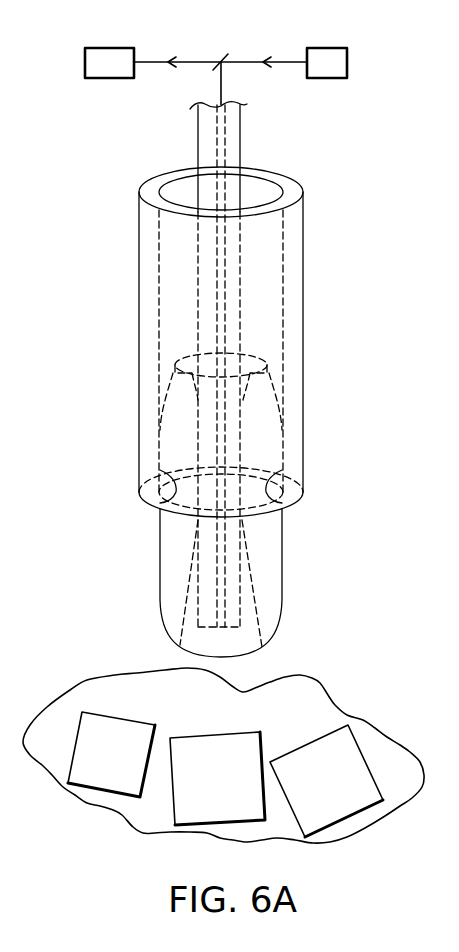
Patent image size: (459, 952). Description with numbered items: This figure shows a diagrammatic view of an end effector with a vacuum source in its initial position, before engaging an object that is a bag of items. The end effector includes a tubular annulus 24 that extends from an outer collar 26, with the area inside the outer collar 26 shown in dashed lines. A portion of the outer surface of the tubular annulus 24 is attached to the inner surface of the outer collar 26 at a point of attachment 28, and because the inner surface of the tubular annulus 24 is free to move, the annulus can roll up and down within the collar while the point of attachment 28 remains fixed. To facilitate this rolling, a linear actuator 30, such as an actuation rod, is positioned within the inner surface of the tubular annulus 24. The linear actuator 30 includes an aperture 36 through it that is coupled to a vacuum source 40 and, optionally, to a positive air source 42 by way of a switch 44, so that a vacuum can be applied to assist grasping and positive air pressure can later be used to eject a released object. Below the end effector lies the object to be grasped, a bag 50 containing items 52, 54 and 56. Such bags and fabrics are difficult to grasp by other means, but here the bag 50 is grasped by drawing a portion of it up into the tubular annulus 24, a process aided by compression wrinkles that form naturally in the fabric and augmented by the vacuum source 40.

The tubular annulus 24 is at (282, 566).
The outer collar 26 is at (303, 255).
The point of attachment 28 is at (162, 503).
The linear actuator 30 is at (242, 145).
The aperture 36 is at (222, 103).
The vacuum source 40 is at (85, 62).
The positive air source 42 is at (347, 62).
The switch 44 is at (223, 55).
The bag 50 is at (312, 685).
The item 52 is at (122, 763).
The item 54 is at (228, 789).
The item 56 is at (342, 796).